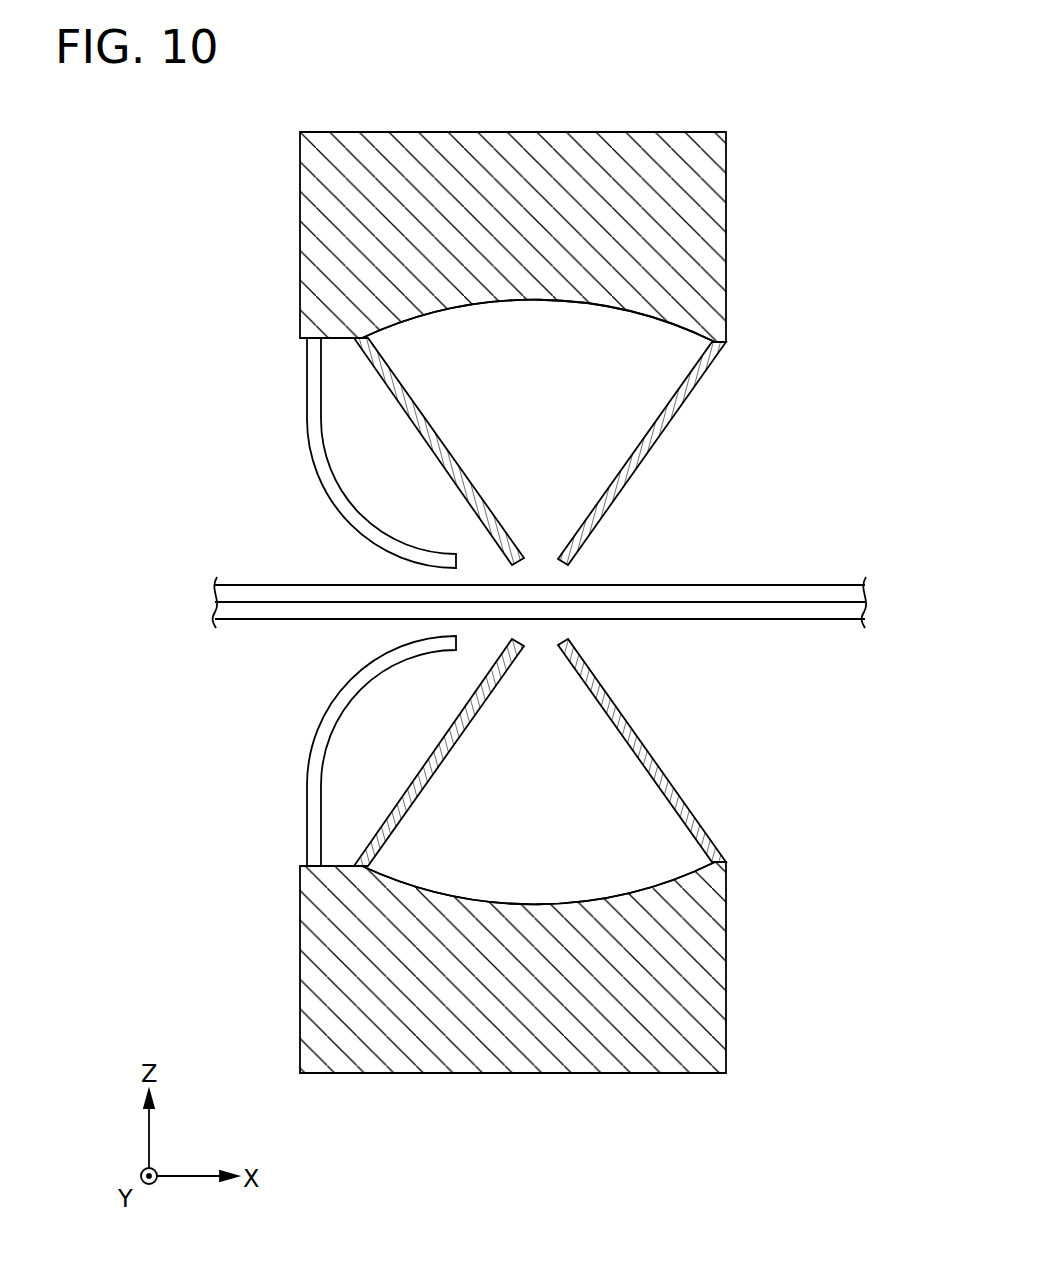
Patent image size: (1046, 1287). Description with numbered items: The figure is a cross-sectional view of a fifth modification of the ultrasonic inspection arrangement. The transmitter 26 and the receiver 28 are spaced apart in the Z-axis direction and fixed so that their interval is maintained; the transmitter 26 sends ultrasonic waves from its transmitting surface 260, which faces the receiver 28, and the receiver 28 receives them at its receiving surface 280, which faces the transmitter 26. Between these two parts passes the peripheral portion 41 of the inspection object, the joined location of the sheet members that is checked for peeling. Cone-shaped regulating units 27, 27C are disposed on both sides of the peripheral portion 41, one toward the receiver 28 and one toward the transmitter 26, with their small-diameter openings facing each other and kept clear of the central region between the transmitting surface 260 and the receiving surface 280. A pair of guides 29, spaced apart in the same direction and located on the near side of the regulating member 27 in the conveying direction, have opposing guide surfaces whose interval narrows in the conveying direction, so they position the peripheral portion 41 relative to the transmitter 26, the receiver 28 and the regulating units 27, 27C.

The transmitter 26 is at (300, 250).
The transmitting surface 260 is at (540, 299).
The receiver 28 is at (300, 975).
The receiving surface 280 is at (538, 906).
The regulating unit 27C is at (445, 472).
The regulating member 27 is at (443, 738).
The guides 29 is at (307, 447).
The peripheral portion 41 is at (775, 585).